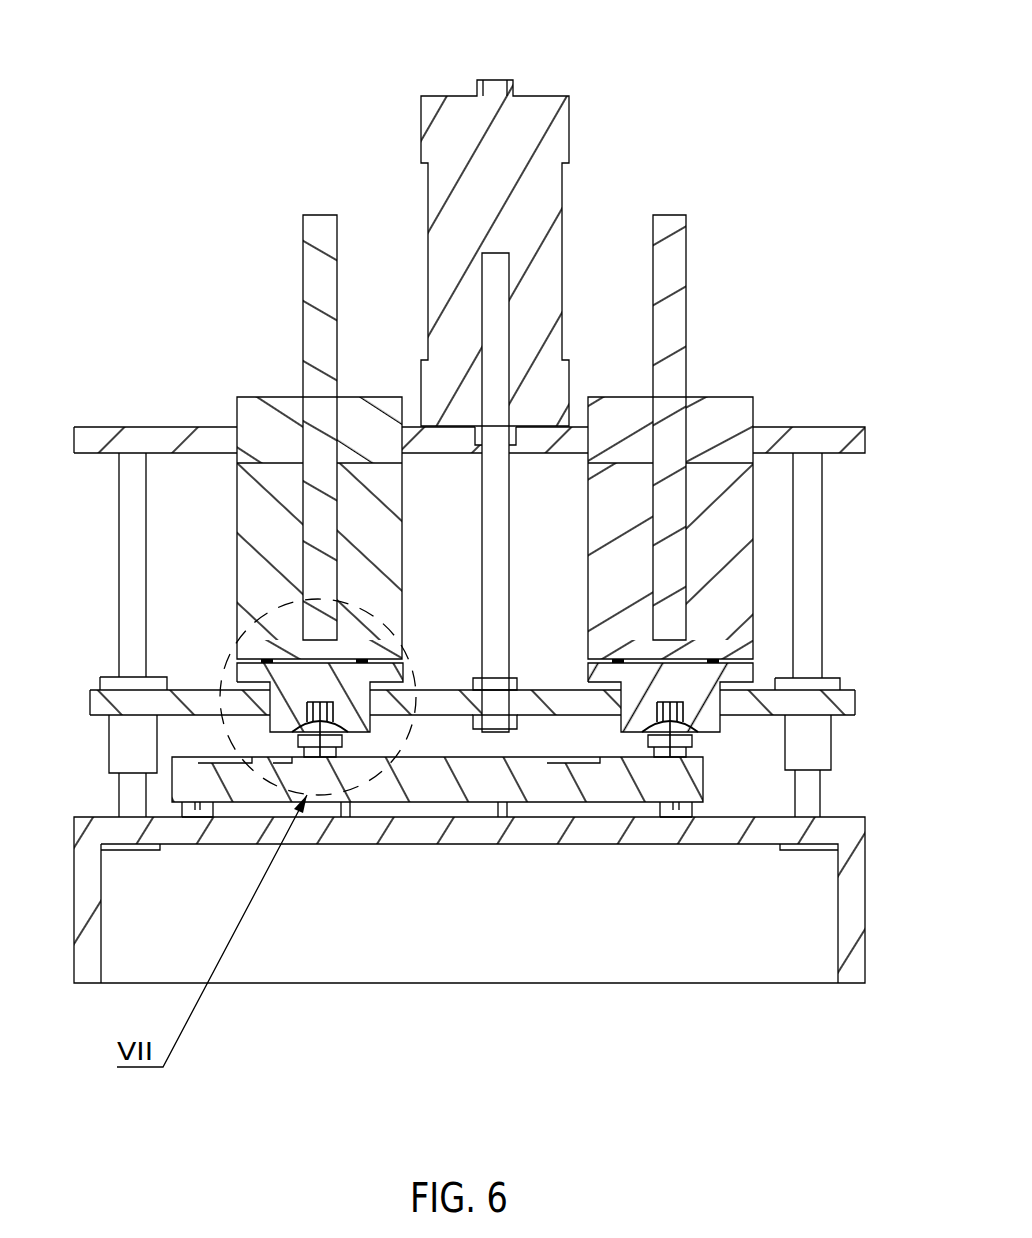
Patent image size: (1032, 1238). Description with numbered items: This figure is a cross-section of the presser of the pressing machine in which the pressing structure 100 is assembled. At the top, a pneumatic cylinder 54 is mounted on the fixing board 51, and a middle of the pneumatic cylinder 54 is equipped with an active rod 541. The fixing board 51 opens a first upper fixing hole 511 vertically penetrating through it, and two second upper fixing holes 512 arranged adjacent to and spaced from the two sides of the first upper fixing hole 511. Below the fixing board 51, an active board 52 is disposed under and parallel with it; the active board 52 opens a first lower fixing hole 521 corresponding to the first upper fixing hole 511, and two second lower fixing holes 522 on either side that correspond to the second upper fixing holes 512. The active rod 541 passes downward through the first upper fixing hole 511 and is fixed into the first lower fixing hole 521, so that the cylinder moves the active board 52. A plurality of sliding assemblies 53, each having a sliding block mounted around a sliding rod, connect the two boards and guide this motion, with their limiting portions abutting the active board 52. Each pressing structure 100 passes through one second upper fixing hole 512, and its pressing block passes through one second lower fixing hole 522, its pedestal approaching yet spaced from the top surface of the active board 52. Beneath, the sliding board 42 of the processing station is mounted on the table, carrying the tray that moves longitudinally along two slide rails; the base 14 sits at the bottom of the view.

The base 14 is at (90, 873).
The sliding board 42 is at (603, 783).
The fixing board 51 is at (817, 438).
The first upper fixing hole 511 is at (478, 437).
The second upper fixing hole 512 is at (237, 447).
The active board 52 is at (813, 703).
The first lower fixing hole 521 is at (503, 722).
The second lower fixing hole 522 is at (723, 705).
The sliding assembly 53 is at (130, 618).
The pneumatic cylinder 54 is at (531, 125).
The active rod 541 is at (490, 467).
The pressing structure 100 is at (264, 422).